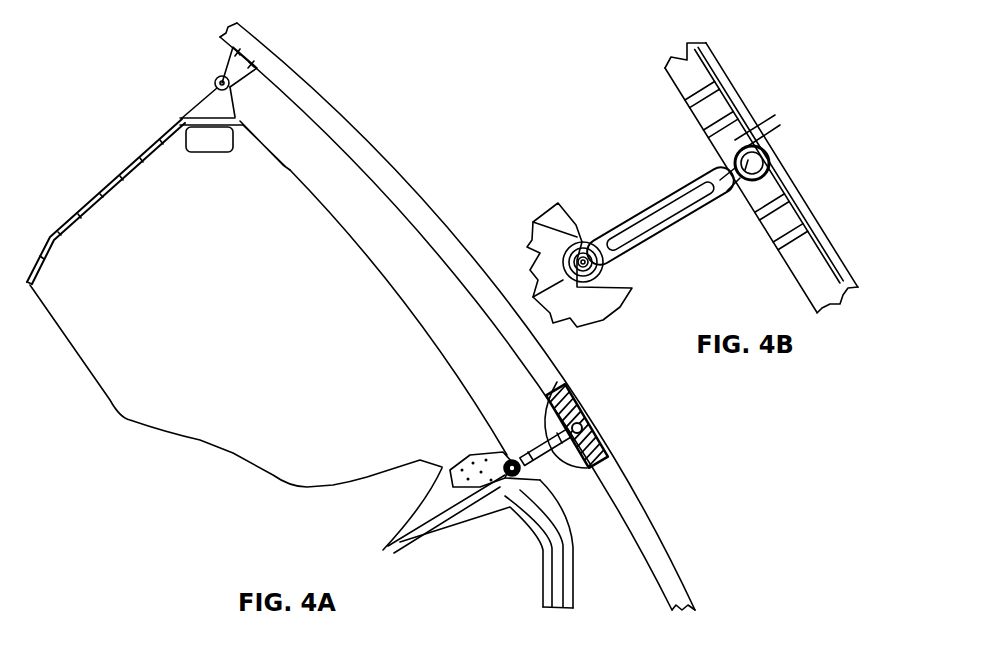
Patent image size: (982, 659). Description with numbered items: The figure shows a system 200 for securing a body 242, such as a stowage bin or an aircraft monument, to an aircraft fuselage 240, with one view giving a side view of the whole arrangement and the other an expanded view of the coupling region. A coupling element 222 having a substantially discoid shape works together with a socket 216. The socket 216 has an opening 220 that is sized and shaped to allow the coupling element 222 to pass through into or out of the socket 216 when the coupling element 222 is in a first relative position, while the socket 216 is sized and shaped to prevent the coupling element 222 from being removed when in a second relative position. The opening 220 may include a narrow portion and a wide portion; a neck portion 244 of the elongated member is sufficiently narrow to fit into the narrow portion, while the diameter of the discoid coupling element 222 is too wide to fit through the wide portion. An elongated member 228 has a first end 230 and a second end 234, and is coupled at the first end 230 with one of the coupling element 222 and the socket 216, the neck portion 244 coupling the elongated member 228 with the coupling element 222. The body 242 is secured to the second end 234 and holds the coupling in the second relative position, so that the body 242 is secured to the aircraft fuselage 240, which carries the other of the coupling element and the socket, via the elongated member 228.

In FIG. 4A, the system 200 is at (126, 73).
In FIG. 4B, the socket 216 is at (752, 132).
In FIG. 4B, the opening 220 is at (732, 205).
In FIG. 4B, the coupling element 222 is at (775, 152).
In FIG. 4A, the elongated member 228 is at (587, 468).
In FIG. 4A, the first end 230 is at (557, 382).
In FIG. 4A, the second end 234 is at (510, 462).
In FIG. 4A, the aircraft fuselage 240 is at (647, 541).
In FIG. 4B, the aircraft fuselage 240 is at (675, 72).
In FIG. 4A, the body 242 is at (510, 507).
In FIG. 4B, the body 242 is at (530, 225).
In FIG. 4B, the neck portion 244 is at (727, 170).